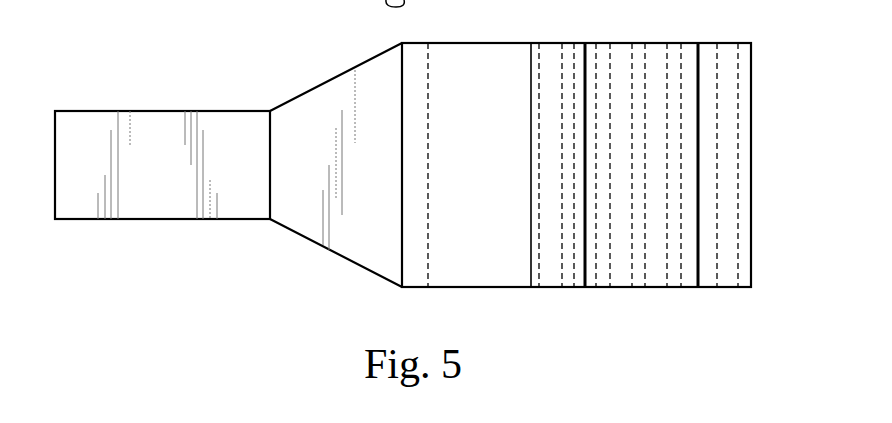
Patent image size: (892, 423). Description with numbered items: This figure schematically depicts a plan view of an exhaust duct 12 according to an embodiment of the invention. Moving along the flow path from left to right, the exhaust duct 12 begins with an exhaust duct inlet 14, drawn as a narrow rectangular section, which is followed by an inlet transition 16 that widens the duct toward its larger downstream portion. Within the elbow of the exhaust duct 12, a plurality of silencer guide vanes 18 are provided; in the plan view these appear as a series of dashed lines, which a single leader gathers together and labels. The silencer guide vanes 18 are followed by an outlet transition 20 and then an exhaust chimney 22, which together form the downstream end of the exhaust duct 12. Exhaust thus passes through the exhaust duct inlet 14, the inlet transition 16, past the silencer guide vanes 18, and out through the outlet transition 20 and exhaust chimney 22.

The exhaust duct 12 is at (311, 290).
The exhaust duct inlet 14 is at (147, 125).
The inlet transition 16 is at (306, 104).
The silencer guide vanes 18 is at (637, 265).
The outlet transition 20 is at (743, 113).
The exhaust chimney 22 is at (660, 50).